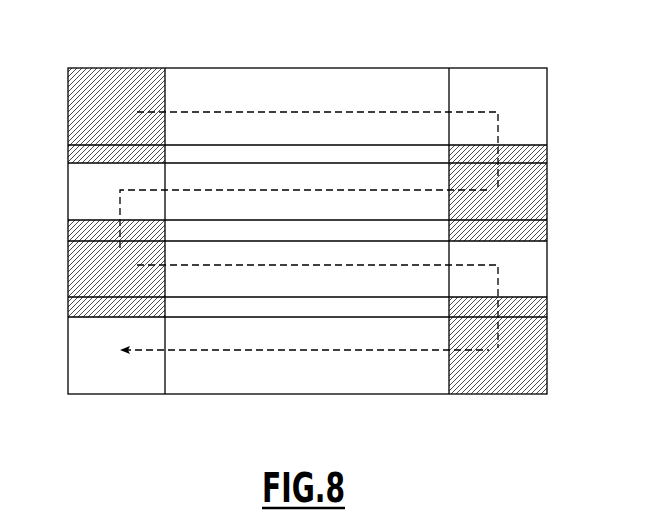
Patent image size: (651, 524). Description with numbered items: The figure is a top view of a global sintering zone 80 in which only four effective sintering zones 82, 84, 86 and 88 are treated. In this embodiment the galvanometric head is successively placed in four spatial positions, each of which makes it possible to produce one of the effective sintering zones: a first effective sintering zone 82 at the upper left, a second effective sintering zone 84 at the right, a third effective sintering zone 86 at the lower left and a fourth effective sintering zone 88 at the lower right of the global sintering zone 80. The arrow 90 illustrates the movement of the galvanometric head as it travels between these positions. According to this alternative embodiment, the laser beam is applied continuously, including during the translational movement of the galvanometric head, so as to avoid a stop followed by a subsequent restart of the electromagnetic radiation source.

The global sintering zone 80 is at (303, 223).
The effective sintering zone 82 is at (145, 68).
The effective sintering zone 84 is at (547, 197).
The effective sintering zone 86 is at (68, 280).
The effective sintering zone 88 is at (538, 356).
The arrow 90 is at (246, 350).